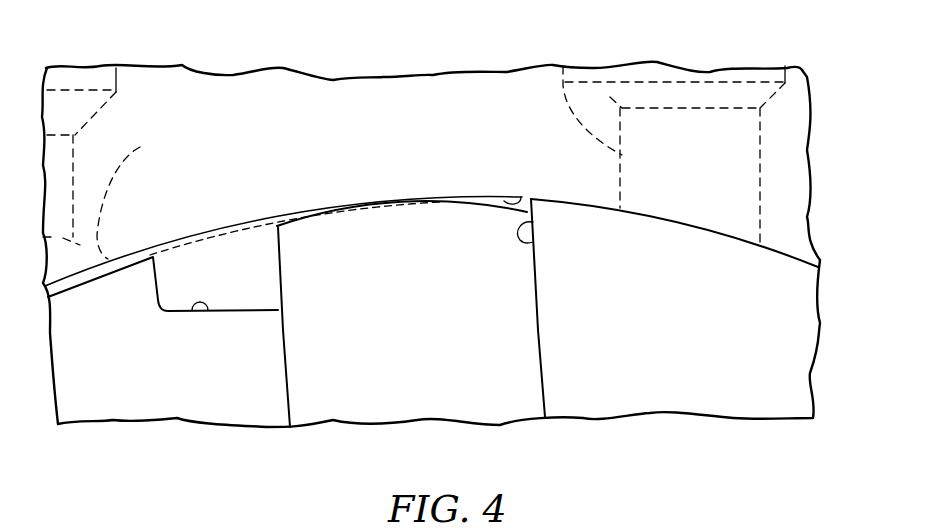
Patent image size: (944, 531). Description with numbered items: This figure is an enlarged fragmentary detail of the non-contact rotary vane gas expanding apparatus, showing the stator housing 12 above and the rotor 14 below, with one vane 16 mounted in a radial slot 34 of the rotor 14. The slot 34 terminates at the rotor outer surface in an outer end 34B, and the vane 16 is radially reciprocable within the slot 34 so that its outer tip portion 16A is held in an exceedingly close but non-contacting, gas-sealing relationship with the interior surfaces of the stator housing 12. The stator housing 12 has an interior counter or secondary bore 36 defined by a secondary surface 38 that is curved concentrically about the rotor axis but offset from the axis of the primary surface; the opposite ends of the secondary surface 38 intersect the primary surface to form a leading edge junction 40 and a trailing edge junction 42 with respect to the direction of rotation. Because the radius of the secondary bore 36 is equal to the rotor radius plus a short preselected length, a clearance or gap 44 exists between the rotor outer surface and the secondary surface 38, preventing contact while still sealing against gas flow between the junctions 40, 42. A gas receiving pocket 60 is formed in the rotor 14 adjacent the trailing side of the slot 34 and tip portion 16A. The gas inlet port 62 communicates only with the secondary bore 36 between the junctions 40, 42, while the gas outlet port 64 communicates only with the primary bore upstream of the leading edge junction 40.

The stator housing 12 is at (182, 65).
The rotor 14 is at (145, 404).
The vane 16 is at (470, 280).
The outer tip portion 16A is at (433, 198).
The slot 34 is at (530, 318).
The outer end 34B is at (533, 241).
The secondary bore 36 is at (202, 242).
The secondary surface 38 is at (521, 197).
The leading edge junction 40 is at (146, 252).
The trailing edge junction 42 is at (793, 256).
The clearance or gap 44 is at (333, 200).
The gas receiving pocket 60 is at (193, 305).
The gas inlet port 62 is at (560, 55).
The gas outlet port 64 is at (107, 163).